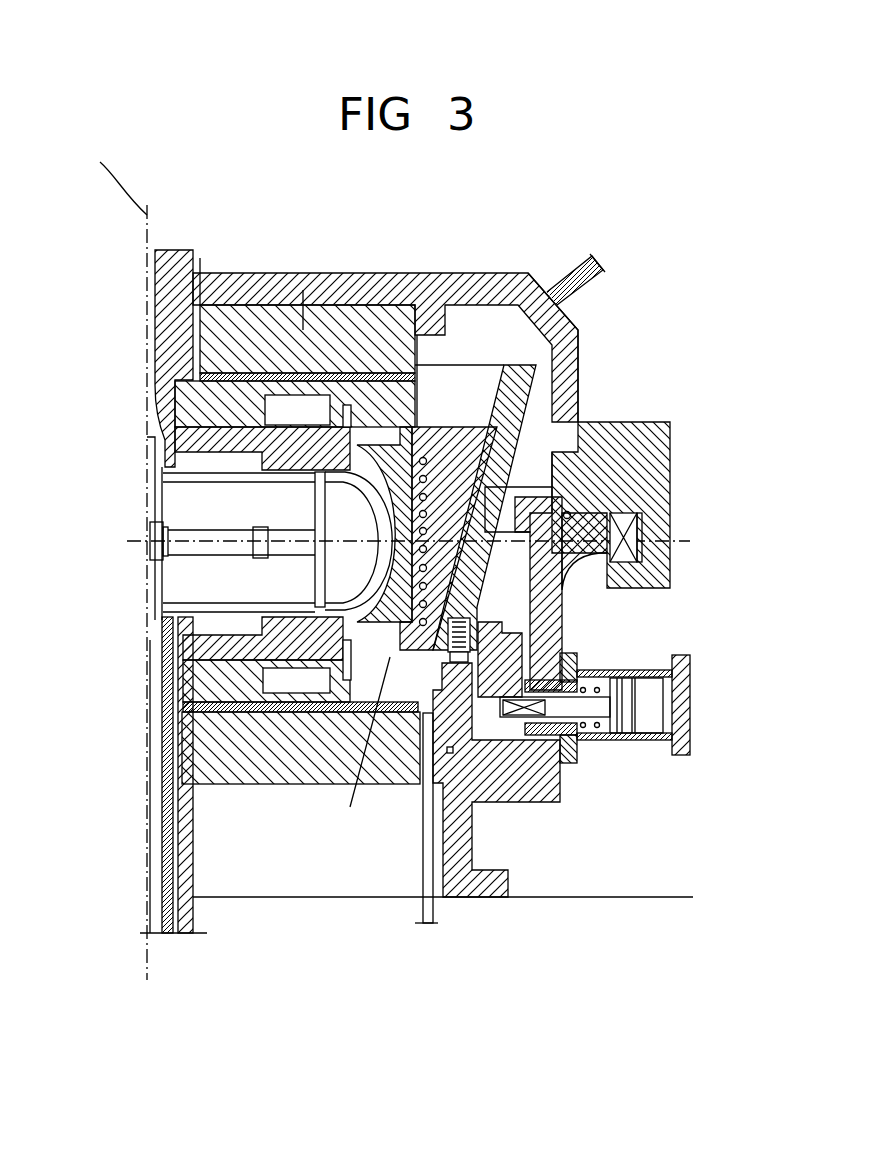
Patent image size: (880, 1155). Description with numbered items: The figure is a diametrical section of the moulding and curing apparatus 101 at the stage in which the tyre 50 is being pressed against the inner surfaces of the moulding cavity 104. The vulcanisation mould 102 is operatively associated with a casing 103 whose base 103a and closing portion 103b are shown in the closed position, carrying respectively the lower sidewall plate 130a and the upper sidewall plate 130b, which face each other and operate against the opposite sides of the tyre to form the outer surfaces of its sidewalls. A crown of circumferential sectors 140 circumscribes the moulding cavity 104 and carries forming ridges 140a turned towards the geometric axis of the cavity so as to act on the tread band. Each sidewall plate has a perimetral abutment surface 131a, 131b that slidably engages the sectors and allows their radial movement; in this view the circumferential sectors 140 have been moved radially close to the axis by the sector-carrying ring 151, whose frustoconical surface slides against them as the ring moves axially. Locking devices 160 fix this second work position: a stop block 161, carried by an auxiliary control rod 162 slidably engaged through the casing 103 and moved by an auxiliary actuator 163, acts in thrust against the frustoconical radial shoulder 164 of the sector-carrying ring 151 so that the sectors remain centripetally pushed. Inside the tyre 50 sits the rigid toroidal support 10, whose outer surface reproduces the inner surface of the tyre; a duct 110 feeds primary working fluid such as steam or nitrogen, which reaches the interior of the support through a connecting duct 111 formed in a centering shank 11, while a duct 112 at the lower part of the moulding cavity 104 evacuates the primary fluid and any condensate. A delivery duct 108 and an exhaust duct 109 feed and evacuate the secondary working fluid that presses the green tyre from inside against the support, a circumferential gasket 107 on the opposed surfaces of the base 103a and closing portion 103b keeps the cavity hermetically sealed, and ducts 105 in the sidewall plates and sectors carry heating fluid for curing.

The moulding and curing apparatus 101 is at (185, 145).
The toroidal support 10 is at (313, 502).
The centering shank 11 is at (155, 458).
The tyre 50 is at (303, 290).
The vulcanisation mould 102 is at (452, 300).
The casing 103 is at (585, 412).
The base 103a is at (275, 768).
The closing portion 103b is at (585, 330).
The moulding cavity 104 is at (187, 587).
The ducts 105 is at (285, 400).
The circumferential gasket 107 is at (600, 513).
The delivery duct 108 is at (577, 288).
The exhaust duct 109 is at (427, 878).
The duct 110 is at (157, 913).
The connecting duct 111 is at (150, 516).
The duct 112 is at (175, 863).
The lower sidewall plate 130a is at (200, 680).
The upper sidewall plate 130b is at (190, 420).
The perimetral abutment surface 131a is at (354, 746).
The perimetral abutment surface 131b is at (370, 340).
The circumferential sectors 140 is at (432, 412).
The forming ridges 140a is at (378, 588).
The sector-carrying ring 151 is at (520, 393).
The locking devices 160 is at (640, 647).
The stop block 161 is at (517, 712).
The auxiliary control rod 162 is at (573, 705).
The auxiliary actuator 163 is at (638, 745).
The radial shoulder 164 is at (485, 703).